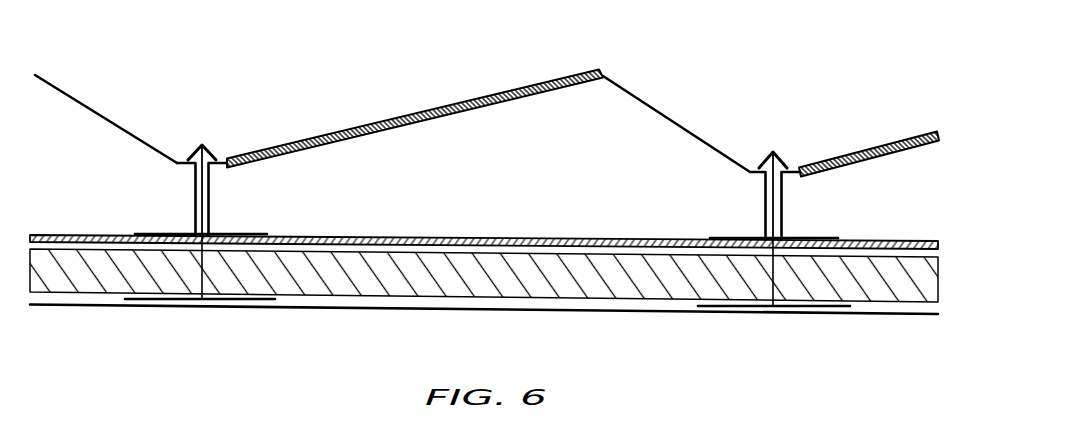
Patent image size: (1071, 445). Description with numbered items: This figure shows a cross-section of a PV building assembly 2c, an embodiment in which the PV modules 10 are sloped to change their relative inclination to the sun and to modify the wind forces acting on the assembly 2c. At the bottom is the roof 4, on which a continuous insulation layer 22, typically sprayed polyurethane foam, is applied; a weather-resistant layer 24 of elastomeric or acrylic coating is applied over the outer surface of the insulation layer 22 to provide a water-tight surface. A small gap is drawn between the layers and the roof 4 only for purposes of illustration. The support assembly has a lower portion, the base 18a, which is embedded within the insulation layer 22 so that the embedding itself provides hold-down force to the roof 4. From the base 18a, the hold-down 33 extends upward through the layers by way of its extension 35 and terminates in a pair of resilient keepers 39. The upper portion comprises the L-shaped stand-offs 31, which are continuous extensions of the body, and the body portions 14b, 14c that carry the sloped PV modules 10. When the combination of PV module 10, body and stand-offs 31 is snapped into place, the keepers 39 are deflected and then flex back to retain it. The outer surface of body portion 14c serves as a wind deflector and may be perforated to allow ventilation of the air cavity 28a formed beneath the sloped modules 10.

The PV building assembly 2c is at (670, 51).
The PV module 10 is at (583, 123).
The body portion 14b is at (522, 103).
The body portion 14c is at (682, 128).
The air cavity 28a is at (484, 181).
The resilient keeper 39 is at (196, 155).
The hold-down 33 is at (189, 192).
The stand-off 31 is at (210, 200).
The extension 35 is at (202, 272).
The base 18a is at (260, 303).
The weather-resistant layer 24 is at (553, 237).
The insulation layer 22 is at (607, 285).
The roof 4 is at (533, 312).